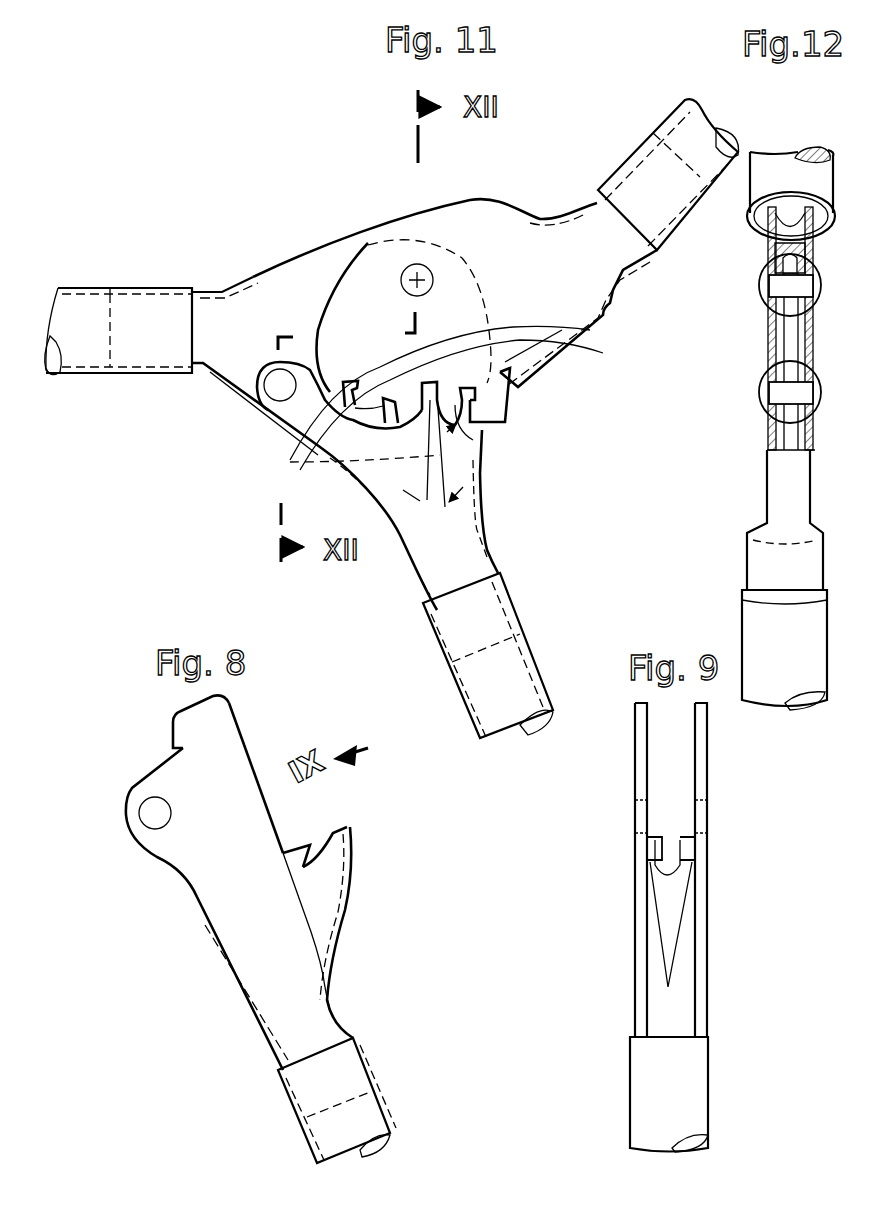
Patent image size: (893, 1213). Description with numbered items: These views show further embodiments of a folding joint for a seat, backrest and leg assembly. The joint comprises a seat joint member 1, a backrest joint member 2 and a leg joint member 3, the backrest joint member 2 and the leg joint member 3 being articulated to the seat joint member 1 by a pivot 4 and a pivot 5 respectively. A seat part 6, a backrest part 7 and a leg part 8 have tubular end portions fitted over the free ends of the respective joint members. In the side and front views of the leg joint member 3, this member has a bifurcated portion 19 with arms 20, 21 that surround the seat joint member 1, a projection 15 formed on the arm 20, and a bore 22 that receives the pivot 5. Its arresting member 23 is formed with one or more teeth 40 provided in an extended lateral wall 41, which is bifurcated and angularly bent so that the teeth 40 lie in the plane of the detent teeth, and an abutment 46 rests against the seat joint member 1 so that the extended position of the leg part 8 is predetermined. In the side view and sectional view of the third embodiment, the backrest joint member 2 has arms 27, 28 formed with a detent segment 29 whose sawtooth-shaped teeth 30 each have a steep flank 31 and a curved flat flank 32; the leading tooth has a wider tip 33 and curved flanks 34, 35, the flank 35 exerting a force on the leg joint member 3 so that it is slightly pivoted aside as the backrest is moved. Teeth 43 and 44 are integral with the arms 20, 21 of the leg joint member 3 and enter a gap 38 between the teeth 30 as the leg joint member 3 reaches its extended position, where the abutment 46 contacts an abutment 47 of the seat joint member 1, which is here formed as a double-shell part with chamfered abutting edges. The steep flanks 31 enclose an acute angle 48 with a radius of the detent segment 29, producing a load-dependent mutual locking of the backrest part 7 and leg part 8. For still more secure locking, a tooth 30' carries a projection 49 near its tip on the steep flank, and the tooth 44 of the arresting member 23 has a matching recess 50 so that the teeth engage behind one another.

In FIG. 11, the seat joint member 1 is at (300, 280).
In FIG. 12, the seat joint member 1 is at (788, 338).
In FIG. 11, the backrest joint member 2 is at (515, 237).
In FIG. 12, the backrest joint member 2 is at (754, 225).
In FIG. 11, the leg joint member 3 is at (433, 565).
In FIG. 12, the leg joint member 3 is at (780, 498).
In FIG. 8, the leg joint member 3 is at (250, 960).
In FIG. 9, the leg joint member 3 is at (650, 1003).
In FIG. 11, the pivot 4 is at (405, 270).
In FIG. 12, the pivot 4 is at (765, 290).
In FIG. 11, the pivot 5 is at (273, 390).
In FIG. 12, the pivot 5 is at (780, 395).
In FIG. 11, the seat part 6 is at (102, 305).
In FIG. 11, the backrest part 7 is at (633, 190).
In FIG. 11, the leg part 8 is at (510, 663).
In FIG. 12, the leg part 8 is at (757, 615).
In FIG. 8, the leg part 8 is at (305, 1110).
In FIG. 9, the leg part 8 is at (648, 1108).
In FIG. 8, the projection 15 is at (190, 727).
In FIG. 9, the bifurcated portion 19 is at (625, 742).
In FIG. 11, the arm 20 is at (290, 408).
In FIG. 12, the arm 20 is at (772, 428).
In FIG. 9, the arm 20 is at (705, 780).
In FIG. 12, the arm 21 is at (776, 368).
In FIG. 9, the arm 21 is at (635, 790).
In FIG. 8, the bore 22 is at (148, 817).
In FIG. 11, the arresting member 23 is at (472, 445).
In FIG. 8, the arresting member 23 is at (318, 823).
In FIG. 12, the arm 27 is at (833, 232).
In FIG. 12, the arm 28 is at (758, 245).
In FIG. 11, the detent segment 29 is at (590, 330).
In FIG. 11, the teeth 30 is at (304, 452).
In FIG. 11, the tooth 30' is at (567, 377).
In FIG. 11, the steep flank 31 is at (590, 352).
In FIG. 11, the flat flank 32 is at (400, 435).
In FIG. 11, the tip 33 is at (330, 372).
In FIG. 11, the curved flank 34 is at (310, 435).
In FIG. 11, the curved flank 35 is at (303, 337).
In FIG. 11, the gap 38 is at (367, 390).
In FIG. 8, the teeth 40 is at (343, 838).
In FIG. 9, the teeth 40 is at (648, 850).
In FIG. 8, the extended lateral wall 41 is at (328, 885).
In FIG. 9, the extended lateral wall 41 is at (672, 920).
In FIG. 11, the tooth 43 is at (445, 400).
In FIG. 11, the tooth 44 is at (508, 400).
In FIG. 11, the abutment 46 is at (473, 432).
In FIG. 8, the abutment 46 is at (350, 862).
In FIG. 9, the abutment 46 is at (685, 843).
In FIG. 11, the abutment 47 is at (505, 418).
In FIG. 11, the acute angle 48 is at (433, 500).
In FIG. 11, the projection 49 is at (480, 438).
In FIG. 11, the recess 50 is at (505, 425).